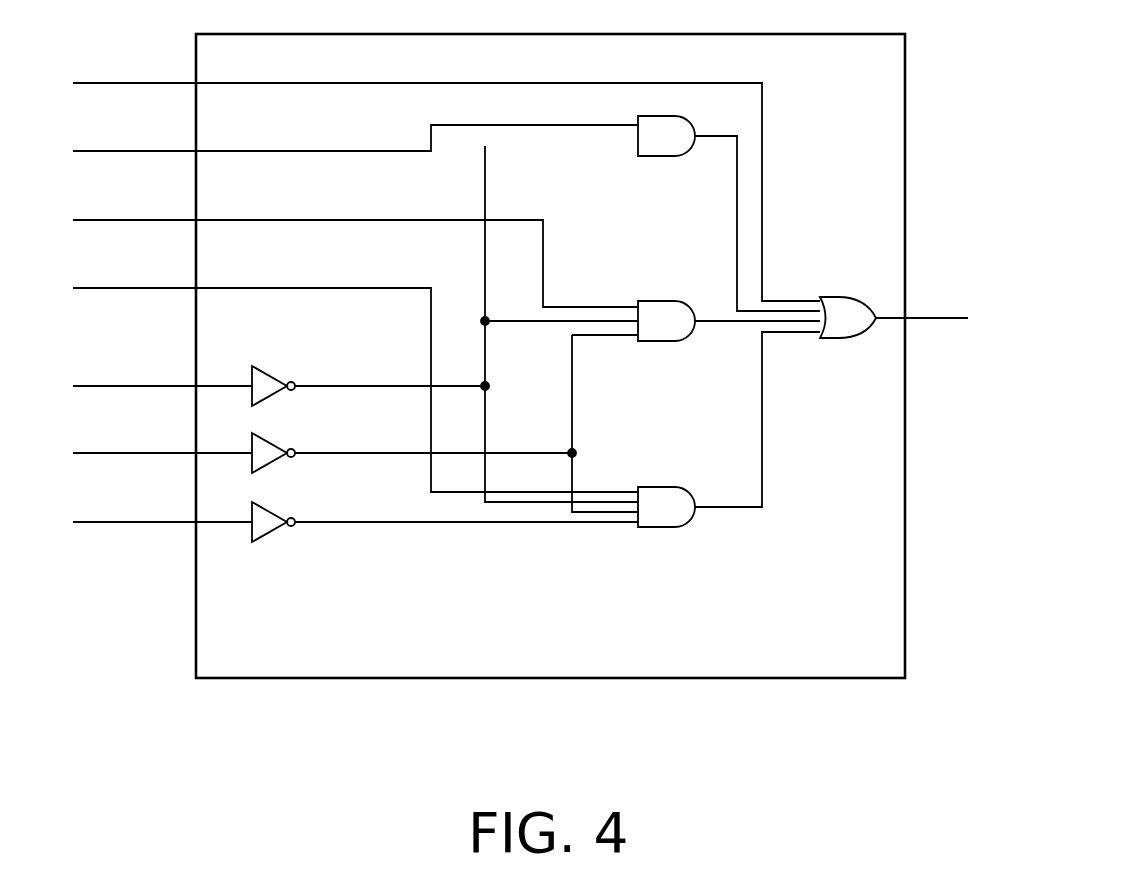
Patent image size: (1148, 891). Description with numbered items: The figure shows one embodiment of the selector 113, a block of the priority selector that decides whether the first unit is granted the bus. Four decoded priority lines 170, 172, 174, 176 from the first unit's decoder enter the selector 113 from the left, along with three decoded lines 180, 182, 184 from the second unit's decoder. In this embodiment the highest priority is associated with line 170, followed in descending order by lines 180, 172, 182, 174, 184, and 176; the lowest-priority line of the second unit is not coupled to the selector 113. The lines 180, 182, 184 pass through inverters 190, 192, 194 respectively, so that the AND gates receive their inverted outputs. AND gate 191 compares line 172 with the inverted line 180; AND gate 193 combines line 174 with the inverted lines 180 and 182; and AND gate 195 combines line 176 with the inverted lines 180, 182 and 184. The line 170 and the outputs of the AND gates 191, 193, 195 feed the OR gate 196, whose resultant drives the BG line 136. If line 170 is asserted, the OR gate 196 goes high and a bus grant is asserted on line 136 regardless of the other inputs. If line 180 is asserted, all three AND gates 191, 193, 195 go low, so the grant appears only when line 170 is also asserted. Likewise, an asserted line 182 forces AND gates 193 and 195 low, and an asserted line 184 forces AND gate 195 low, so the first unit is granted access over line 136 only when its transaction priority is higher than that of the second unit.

The selector 113 is at (455, 34).
The line 170 is at (157, 82).
The line 172 is at (157, 150).
The line 174 is at (157, 219).
The line 176 is at (157, 287).
The line 180 is at (157, 385).
The line 182 is at (157, 452).
The line 184 is at (157, 521).
The inverter 190 is at (268, 369).
The inverter 192 is at (268, 436).
The inverter 194 is at (268, 505).
The AND gate 191 is at (642, 157).
The AND gate 193 is at (642, 342).
The AND gate 195 is at (639, 487).
The OR gate 196 is at (841, 292).
The BG line 136 is at (953, 312).